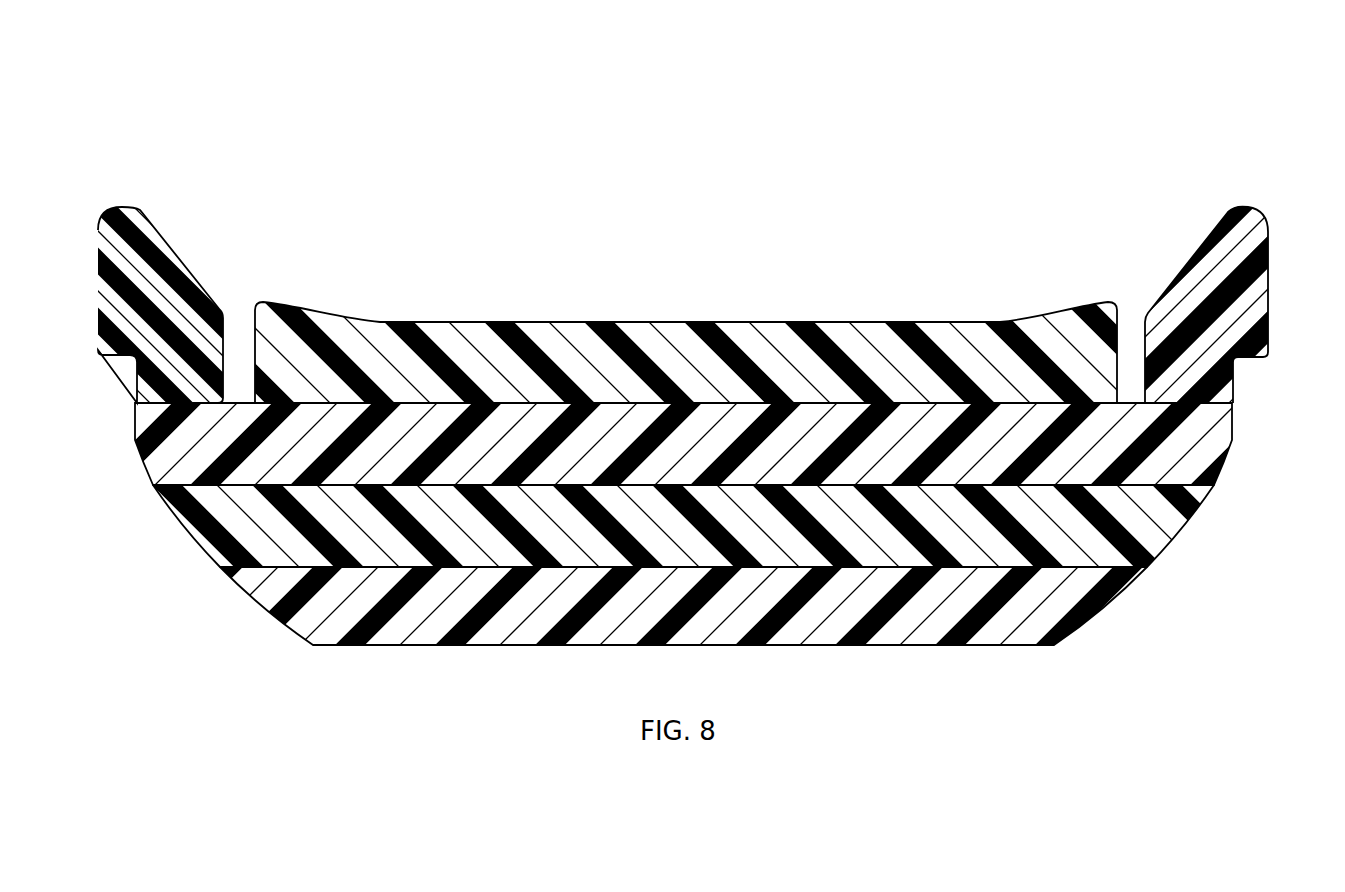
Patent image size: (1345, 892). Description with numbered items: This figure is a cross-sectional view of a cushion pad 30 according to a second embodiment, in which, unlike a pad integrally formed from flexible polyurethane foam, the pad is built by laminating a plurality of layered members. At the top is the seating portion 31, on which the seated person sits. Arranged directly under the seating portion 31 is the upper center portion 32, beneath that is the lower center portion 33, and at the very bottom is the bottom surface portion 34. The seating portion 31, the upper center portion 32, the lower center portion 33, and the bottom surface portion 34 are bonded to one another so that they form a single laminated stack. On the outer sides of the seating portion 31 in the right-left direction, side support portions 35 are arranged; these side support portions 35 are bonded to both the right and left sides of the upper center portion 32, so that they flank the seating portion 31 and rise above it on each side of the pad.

The cushion pad 30 is at (1065, 88).
The seating portion 31 is at (668, 336).
The upper center portion 32 is at (1213, 445).
The lower center portion 33 is at (1167, 532).
The bottom surface portion 34 is at (1088, 602).
The side support portions 35 is at (190, 248).